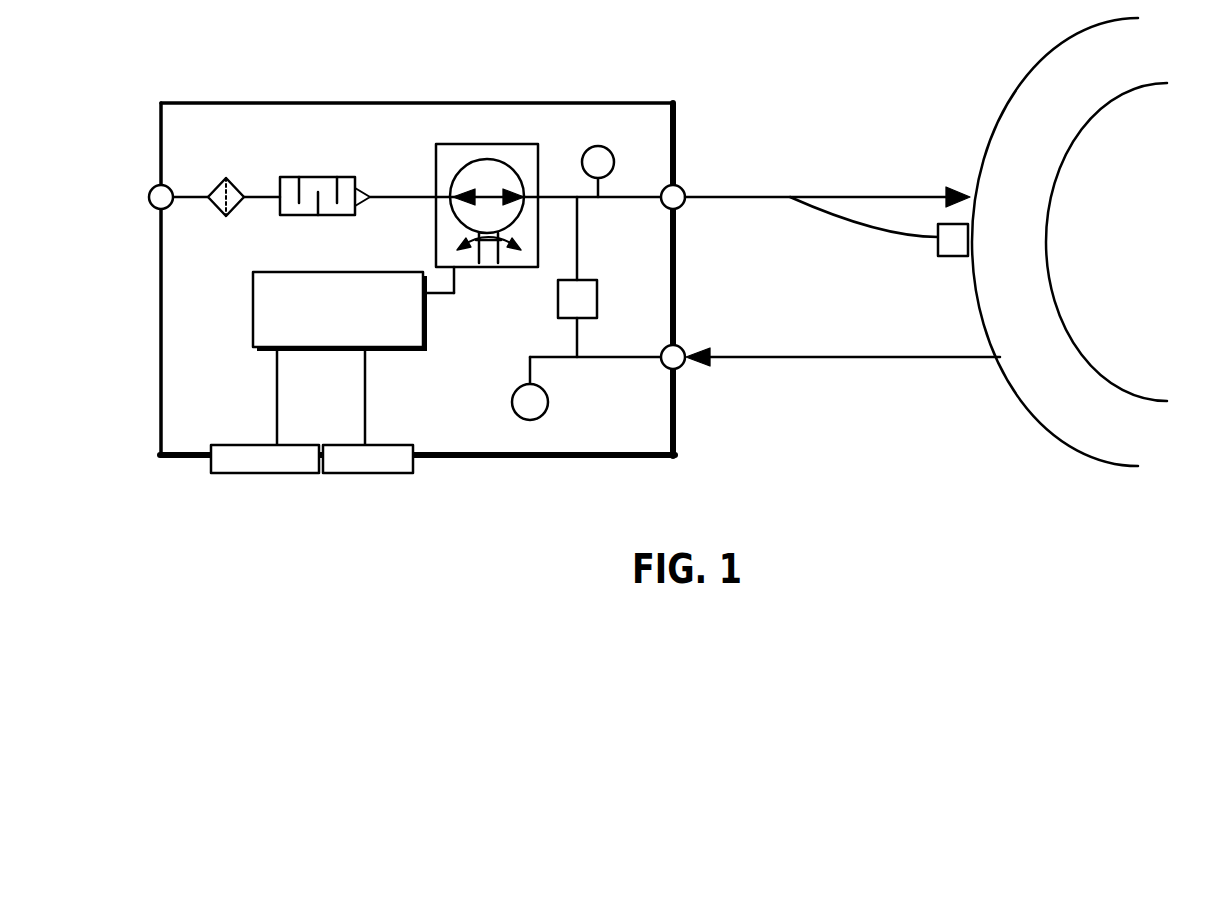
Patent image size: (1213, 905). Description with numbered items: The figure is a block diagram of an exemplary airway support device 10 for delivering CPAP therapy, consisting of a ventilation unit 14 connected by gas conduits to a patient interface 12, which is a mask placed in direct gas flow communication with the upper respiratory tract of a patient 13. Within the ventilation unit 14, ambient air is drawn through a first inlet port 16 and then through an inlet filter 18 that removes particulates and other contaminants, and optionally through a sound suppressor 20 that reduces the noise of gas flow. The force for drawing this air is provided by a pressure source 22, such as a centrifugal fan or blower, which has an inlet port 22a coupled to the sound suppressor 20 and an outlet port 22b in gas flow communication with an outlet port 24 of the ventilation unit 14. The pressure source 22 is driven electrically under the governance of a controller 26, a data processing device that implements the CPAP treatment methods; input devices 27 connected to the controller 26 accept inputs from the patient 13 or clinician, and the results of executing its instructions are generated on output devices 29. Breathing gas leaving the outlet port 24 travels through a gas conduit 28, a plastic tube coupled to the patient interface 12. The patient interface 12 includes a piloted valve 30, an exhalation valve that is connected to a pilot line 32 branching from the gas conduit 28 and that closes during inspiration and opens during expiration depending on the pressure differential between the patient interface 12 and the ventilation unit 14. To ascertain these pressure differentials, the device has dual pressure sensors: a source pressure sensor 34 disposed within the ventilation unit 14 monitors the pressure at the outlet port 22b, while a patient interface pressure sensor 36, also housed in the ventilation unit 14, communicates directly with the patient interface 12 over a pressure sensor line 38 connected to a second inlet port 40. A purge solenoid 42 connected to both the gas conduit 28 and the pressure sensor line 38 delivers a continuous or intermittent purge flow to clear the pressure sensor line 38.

The airway support device 10 is at (867, 438).
The patient interface 12 is at (935, 242).
The patient 13 is at (1109, 242).
The ventilation unit 14 is at (433, 460).
The first inlet port 16 is at (153, 207).
The inlet filter 18 is at (226, 216).
The sound suppressor 20 is at (309, 215).
The pressure source 22 is at (488, 218).
The inlet port 22a is at (452, 198).
The outlet port 22b is at (527, 195).
The outlet port 24 is at (683, 189).
The controller 26 is at (253, 302).
The input devices 27 is at (367, 473).
The gas conduit 28 is at (790, 197).
The output devices 29 is at (272, 473).
The piloted valve 30 is at (968, 240).
The pilot line 32 is at (865, 231).
The source pressure sensor 34 is at (615, 162).
The patient interface pressure sensor 36 is at (577, 393).
The pressure sensor line 38 is at (760, 357).
The second inlet port 40 is at (684, 348).
The purge solenoid 42 is at (597, 300).